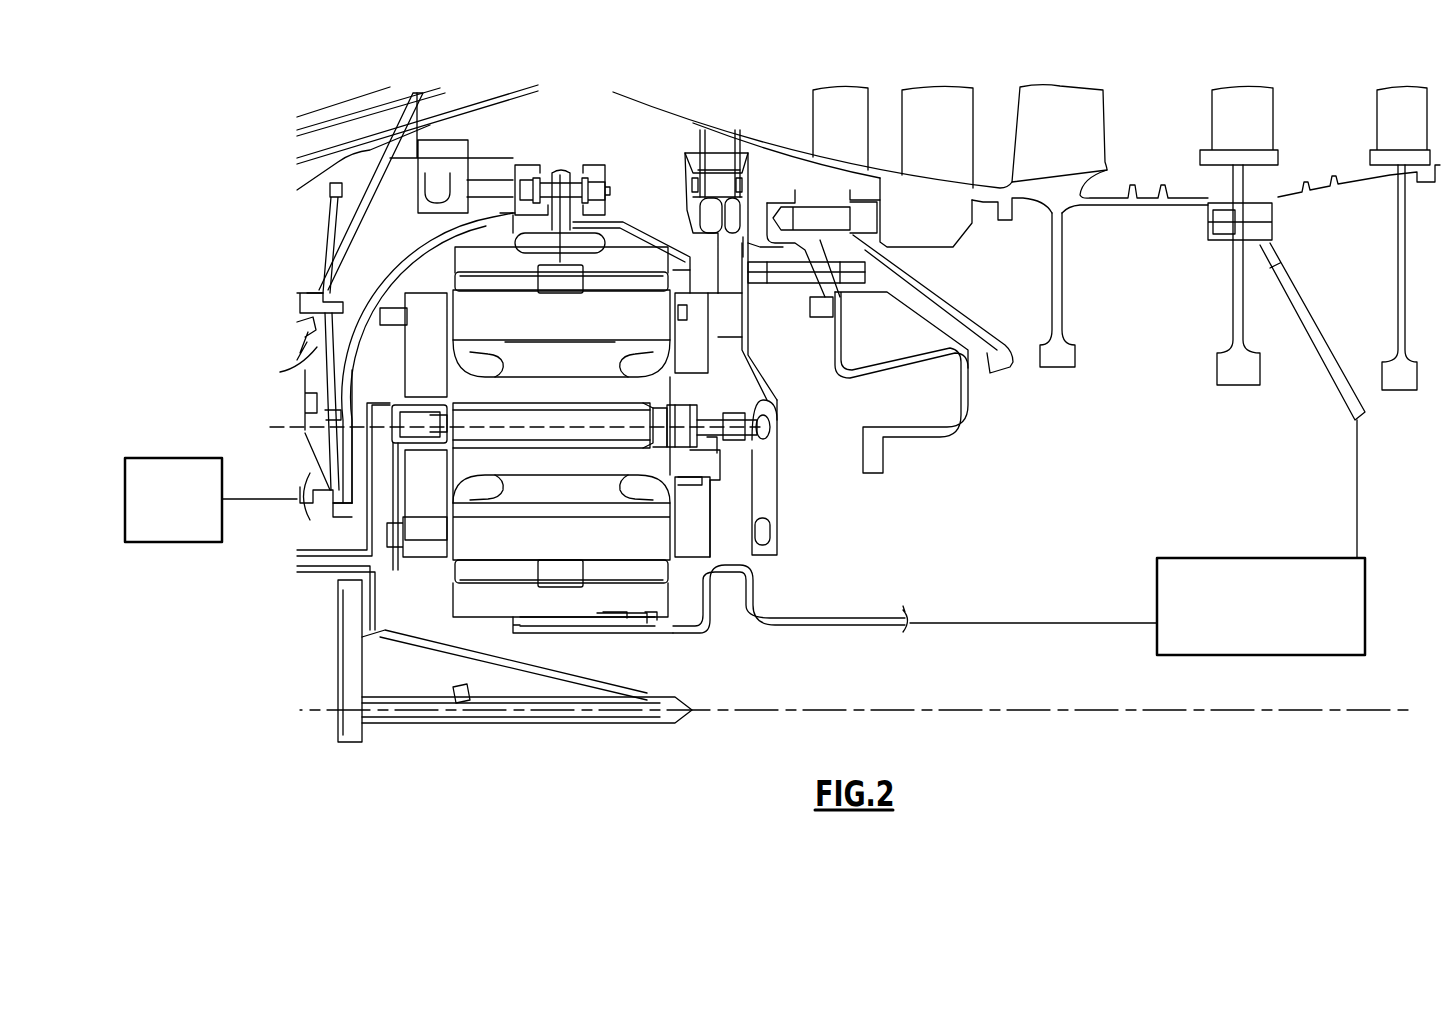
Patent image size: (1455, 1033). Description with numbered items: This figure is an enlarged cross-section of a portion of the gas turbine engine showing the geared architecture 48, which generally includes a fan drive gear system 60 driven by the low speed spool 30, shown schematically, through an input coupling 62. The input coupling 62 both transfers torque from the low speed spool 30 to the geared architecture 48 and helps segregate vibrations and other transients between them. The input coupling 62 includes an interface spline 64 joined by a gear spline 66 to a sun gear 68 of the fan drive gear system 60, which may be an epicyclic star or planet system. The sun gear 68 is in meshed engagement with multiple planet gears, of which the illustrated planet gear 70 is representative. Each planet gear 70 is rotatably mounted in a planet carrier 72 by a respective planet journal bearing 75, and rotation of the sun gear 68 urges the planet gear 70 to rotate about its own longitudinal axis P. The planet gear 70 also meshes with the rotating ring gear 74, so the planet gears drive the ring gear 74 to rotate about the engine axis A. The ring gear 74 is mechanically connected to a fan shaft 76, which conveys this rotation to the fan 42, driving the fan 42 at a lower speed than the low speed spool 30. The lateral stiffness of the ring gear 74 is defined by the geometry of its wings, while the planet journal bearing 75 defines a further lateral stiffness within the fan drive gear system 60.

The low speed spool 30 is at (1270, 617).
The fan 42 is at (189, 512).
The geared architecture 48 is at (594, 115).
The fan drive gear system (FDGS) 60 is at (437, 278).
The input coupling 62 is at (828, 627).
The interface spline 64 is at (577, 618).
The gear spline 66 is at (541, 617).
The sun gear 68 is at (470, 595).
The planet gear 70 is at (563, 552).
The planet carrier 72 is at (697, 362).
The ring gear 74 is at (510, 240).
The planet journal bearing 75 is at (460, 465).
The fan shaft 76 is at (322, 352).
The longitudinal axis P is at (577, 427).
The engine axis A is at (1338, 712).